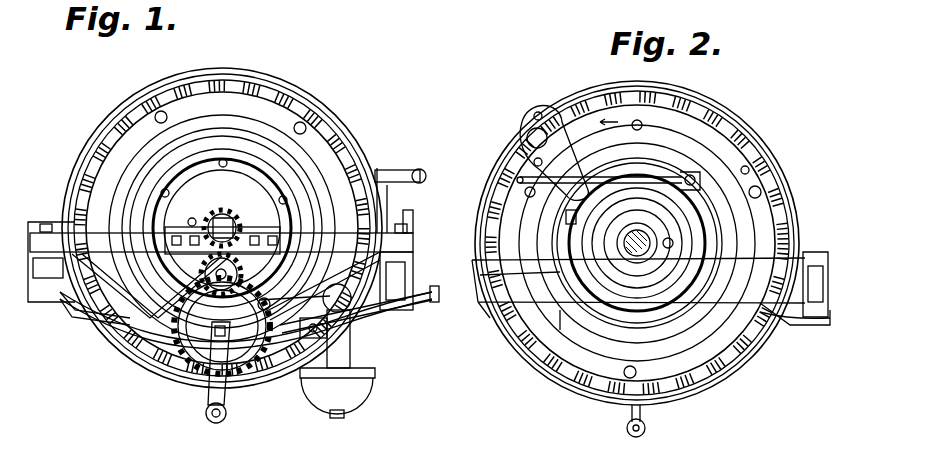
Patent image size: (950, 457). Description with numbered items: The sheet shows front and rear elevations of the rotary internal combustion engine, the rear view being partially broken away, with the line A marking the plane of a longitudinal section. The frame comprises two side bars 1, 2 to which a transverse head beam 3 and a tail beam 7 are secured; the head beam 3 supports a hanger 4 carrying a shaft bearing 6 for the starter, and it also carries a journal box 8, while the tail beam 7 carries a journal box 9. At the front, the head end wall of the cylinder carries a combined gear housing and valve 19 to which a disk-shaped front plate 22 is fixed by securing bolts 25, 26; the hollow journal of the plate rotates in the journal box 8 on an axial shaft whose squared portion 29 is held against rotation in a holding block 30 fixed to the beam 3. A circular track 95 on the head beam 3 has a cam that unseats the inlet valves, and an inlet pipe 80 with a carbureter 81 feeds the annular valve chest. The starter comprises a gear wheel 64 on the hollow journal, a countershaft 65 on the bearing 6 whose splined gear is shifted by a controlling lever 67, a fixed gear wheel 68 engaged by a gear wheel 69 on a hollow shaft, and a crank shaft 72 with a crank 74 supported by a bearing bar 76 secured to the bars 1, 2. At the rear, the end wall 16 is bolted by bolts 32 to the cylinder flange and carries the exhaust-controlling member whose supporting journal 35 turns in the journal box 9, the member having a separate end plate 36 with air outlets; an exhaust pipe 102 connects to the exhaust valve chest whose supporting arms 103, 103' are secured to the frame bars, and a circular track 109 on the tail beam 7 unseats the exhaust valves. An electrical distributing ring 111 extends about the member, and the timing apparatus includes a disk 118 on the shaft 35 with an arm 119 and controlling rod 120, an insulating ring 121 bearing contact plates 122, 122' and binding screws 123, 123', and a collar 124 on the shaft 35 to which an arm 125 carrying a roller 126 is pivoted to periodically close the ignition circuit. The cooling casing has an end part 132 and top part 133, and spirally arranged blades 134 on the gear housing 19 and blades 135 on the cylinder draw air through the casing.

In FIG. 1, the side bar 1 is at (38, 303).
In FIG. 2, the side bar 1 is at (822, 326).
In FIG. 1, the side bar 2 is at (396, 267).
In FIG. 1, the head beam 3 is at (82, 206).
In FIG. 1, the hanger 4 is at (134, 320).
In FIG. 1, the shaft bearing 6 is at (168, 322).
In FIG. 1, the tail beam 7 is at (62, 302).
In FIG. 2, the tail beam 7 is at (510, 314).
In FIG. 1, the journal box 8 is at (192, 218).
In FIG. 2, the journal box 9 is at (626, 260).
In FIG. 2, the rear end wall 16 is at (696, 130).
In FIG. 1, the combined gear housing and valve 19 is at (142, 136).
In FIG. 1, the front plate 22 is at (203, 130).
In FIG. 1, the securing bolt 25 is at (250, 160).
In FIG. 1, the securing bolt 26 is at (161, 111).
In FIG. 1, the squared portion 29 is at (214, 210).
In FIG. 1, the holding block 30 is at (240, 212).
In FIG. 2, the bolt 32 is at (637, 120).
In FIG. 2, the supporting journal 35 is at (640, 270).
In FIG. 2, the end plate 36 is at (680, 160).
In FIG. 1, the gear wheel 64 is at (240, 190).
In FIG. 1, the countershaft 65 is at (176, 334).
In FIG. 1, the controlling lever 67 is at (92, 302).
In FIG. 1, the gear wheel 68 is at (265, 312).
In FIG. 1, the gear wheel 69 is at (206, 332).
In FIG. 1, the crank shaft 72 is at (300, 372).
In FIG. 1, the crank 74 is at (206, 410).
In FIG. 2, the crank 74 is at (646, 426).
In FIG. 1, the bearing bar 76 is at (152, 318).
In FIG. 1, the inlet pipe 80 is at (300, 380).
In FIG. 1, the carbureter 81 is at (350, 331).
In FIG. 1, the circular track 95 is at (118, 178).
In FIG. 2, the exhaust pipe 102 is at (567, 150).
In FIG. 2, the supporting arm 103 is at (653, 268).
In FIG. 2, the supporting arm 103' is at (520, 281).
In FIG. 2, the circular track 109 is at (762, 187).
In FIG. 2, the electrical distributing ring 111 is at (776, 207).
In FIG. 2, the disk 118 is at (632, 268).
In FIG. 2, the arm 119 is at (742, 152).
In FIG. 1, the controlling rod 120 is at (376, 168).
In FIG. 2, the controlling rod 120 is at (528, 166).
In FIG. 2, the insulating ring 121 is at (655, 268).
In FIG. 2, the contact plate 122 is at (648, 252).
In FIG. 2, the contact plate 122' is at (523, 350).
In FIG. 2, the binding screw 123 is at (676, 257).
In FIG. 2, the binding screw 123' is at (541, 214).
In FIG. 2, the collar 124 is at (624, 270).
In FIG. 2, the arm 125 is at (762, 167).
In FIG. 2, the roller 126 is at (662, 257).
In FIG. 1, the end part 132 is at (120, 328).
In FIG. 2, the end part 132 is at (742, 370).
In FIG. 1, the top part 133 is at (104, 126).
In FIG. 2, the top part 133 is at (560, 102).
In FIG. 1, the spirally arranged blades 134 is at (91, 148).
In FIG. 2, the spirally arranged blades 134 is at (613, 90).
In FIG. 2, the spirally arranged blades 135 is at (500, 197).
In FIG. 1, the line A A is at (228, 92).